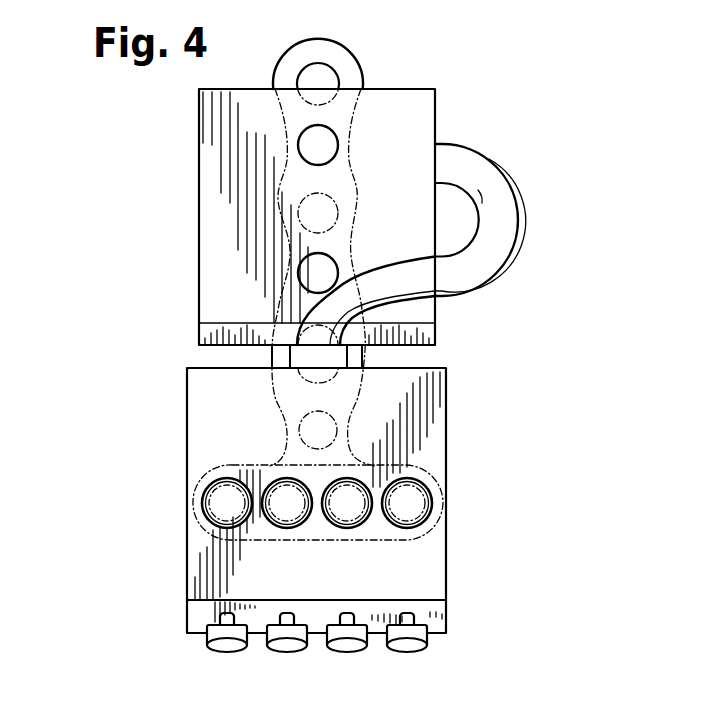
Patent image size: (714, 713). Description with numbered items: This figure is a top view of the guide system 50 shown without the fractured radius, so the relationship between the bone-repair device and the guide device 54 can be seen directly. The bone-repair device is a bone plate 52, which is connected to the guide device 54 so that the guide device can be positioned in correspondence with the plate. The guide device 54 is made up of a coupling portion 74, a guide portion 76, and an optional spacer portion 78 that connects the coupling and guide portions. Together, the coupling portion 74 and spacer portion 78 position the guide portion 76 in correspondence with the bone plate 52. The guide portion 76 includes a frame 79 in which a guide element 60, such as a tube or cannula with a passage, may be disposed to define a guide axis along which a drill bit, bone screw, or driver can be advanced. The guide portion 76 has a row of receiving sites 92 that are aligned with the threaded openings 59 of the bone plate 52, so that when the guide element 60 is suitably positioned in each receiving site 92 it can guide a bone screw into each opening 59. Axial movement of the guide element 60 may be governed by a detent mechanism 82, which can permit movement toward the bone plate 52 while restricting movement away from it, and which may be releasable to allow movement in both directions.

The guide system 50 is at (66, 252).
The coupling portion 74 is at (180, 199).
The spacer portion 78 is at (524, 221).
The guide device 54 is at (526, 295).
The bone plate 52 is at (265, 357).
The frame 79 is at (200, 428).
The guide portion 76 is at (170, 503).
The threaded openings 59 is at (213, 537).
The receiving sites 92 is at (229, 496).
The guide element 60 is at (290, 522).
The detent mechanism 82 is at (362, 662).